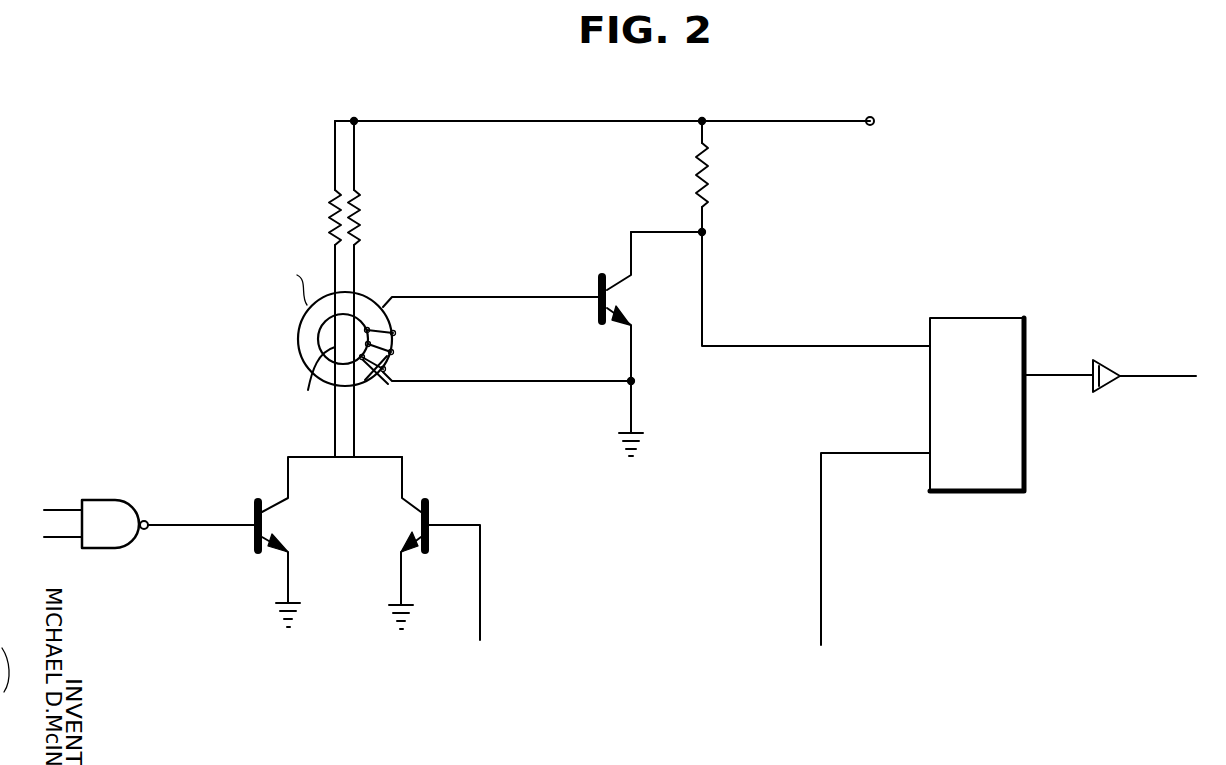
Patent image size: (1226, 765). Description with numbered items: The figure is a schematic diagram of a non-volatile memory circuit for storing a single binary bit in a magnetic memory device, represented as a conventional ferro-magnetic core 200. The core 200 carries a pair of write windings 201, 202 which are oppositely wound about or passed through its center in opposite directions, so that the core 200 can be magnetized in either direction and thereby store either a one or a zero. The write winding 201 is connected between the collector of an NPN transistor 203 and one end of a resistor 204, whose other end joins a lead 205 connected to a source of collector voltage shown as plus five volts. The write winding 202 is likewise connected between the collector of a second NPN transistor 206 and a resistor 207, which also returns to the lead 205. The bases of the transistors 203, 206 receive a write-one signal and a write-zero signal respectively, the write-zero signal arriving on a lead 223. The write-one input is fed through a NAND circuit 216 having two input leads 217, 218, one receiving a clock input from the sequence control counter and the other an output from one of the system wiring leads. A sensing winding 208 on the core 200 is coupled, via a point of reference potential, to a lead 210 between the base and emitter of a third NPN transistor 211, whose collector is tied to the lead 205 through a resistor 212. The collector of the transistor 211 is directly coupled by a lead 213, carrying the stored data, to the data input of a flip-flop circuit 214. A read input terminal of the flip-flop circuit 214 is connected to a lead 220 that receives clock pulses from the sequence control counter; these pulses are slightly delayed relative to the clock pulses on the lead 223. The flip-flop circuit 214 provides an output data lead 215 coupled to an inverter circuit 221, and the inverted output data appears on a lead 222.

The ferro-magnetic core 200 is at (298, 352).
The write winding 201 is at (318, 376).
The write winding 202 is at (356, 413).
The NPN transistor 203 is at (240, 508).
The resistor 204 is at (328, 214).
The lead 205 is at (518, 118).
The second NPN transistor 206 is at (446, 508).
The resistor 207 is at (362, 238).
The sensing winding 208 is at (393, 334).
The lead 210 is at (507, 296).
The third NPN transistor 211 is at (606, 262).
The resistor 212 is at (708, 178).
The lead 213 is at (790, 347).
The flip-flop circuit 214 is at (1000, 318).
The output data lead 215 is at (1062, 377).
The NAND circuit 216 is at (116, 500).
The input lead 217 is at (62, 508).
The input lead 218 is at (58, 540).
The lead 220 is at (821, 545).
The inverter circuit 221 is at (1102, 394).
The lead 222 is at (1150, 378).
The lead 223 is at (481, 591).